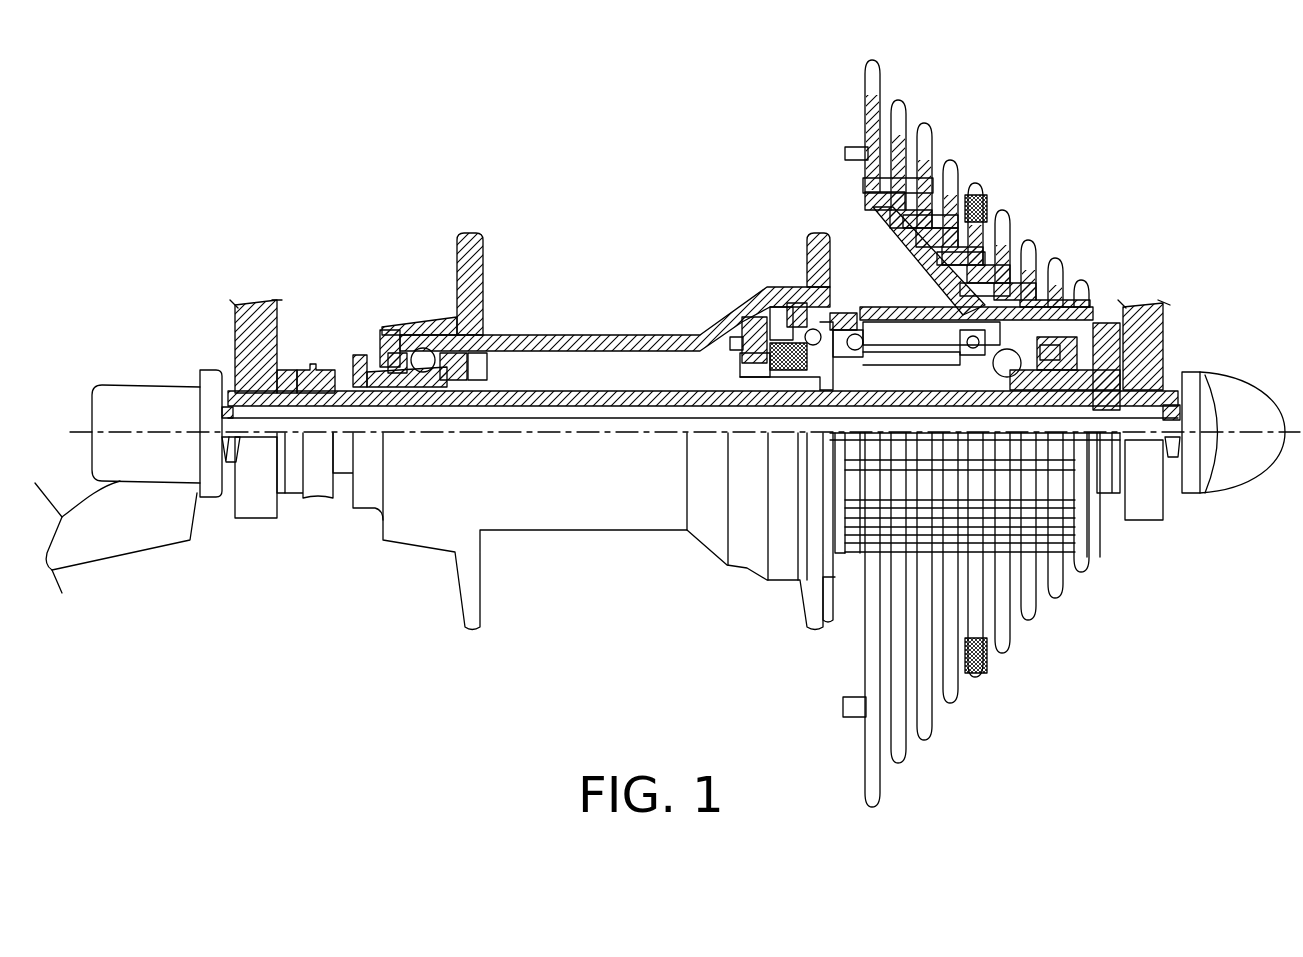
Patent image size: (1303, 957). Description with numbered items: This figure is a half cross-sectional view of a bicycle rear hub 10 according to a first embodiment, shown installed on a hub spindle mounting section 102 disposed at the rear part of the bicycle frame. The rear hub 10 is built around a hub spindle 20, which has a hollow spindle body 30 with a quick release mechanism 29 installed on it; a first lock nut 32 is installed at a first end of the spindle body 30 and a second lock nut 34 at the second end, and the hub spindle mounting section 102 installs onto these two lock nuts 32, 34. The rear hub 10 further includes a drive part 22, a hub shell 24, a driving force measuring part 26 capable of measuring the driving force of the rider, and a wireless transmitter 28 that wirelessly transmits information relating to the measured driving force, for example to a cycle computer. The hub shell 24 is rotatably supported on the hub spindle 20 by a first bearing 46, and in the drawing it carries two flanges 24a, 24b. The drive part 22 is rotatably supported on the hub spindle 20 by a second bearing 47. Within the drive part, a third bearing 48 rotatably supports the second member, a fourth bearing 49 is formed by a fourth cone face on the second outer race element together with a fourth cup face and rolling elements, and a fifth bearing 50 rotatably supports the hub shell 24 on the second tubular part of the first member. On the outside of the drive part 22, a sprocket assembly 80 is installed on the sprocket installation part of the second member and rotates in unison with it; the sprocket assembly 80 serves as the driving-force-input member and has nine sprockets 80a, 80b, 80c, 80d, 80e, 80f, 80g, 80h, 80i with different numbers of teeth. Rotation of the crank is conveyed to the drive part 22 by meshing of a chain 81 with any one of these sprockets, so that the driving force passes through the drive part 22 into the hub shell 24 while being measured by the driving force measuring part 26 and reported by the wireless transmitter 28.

The bicycle rear hub 10 is at (598, 225).
The hub spindle 20 is at (573, 337).
The drive part 22 is at (902, 313).
The hub shell 24 is at (660, 310).
The first hub flange 24a is at (470, 237).
The second hub flange 24b is at (826, 232).
The driving force measuring part 26 is at (738, 333).
The wireless transmitter 28 is at (457, 310).
The quick release mechanism 29 is at (157, 400).
The spindle body 30 is at (625, 377).
The first lock nut 32 is at (297, 367).
The second lock nut 34 is at (1135, 305).
The first bearing 46 is at (410, 337).
The second bearing 47 is at (1040, 332).
The third bearing 48 is at (847, 330).
The fourth bearing 49 is at (980, 340).
The fifth bearing 50 is at (765, 365).
The sprocket assembly 80 is at (1021, 194).
The sprocket 80a is at (1086, 575).
The sprocket 80b is at (1060, 598).
The sprocket 80c is at (1034, 620).
The sprocket 80d is at (1008, 653).
The sprocket 80e is at (982, 677).
The sprocket 80f is at (957, 703).
The sprocket 80g is at (930, 740).
The sprocket 80h is at (905, 765).
The sprocket 80i is at (880, 806).
The chain 81 is at (983, 195).
The hub spindle mounting section 102 is at (258, 318).